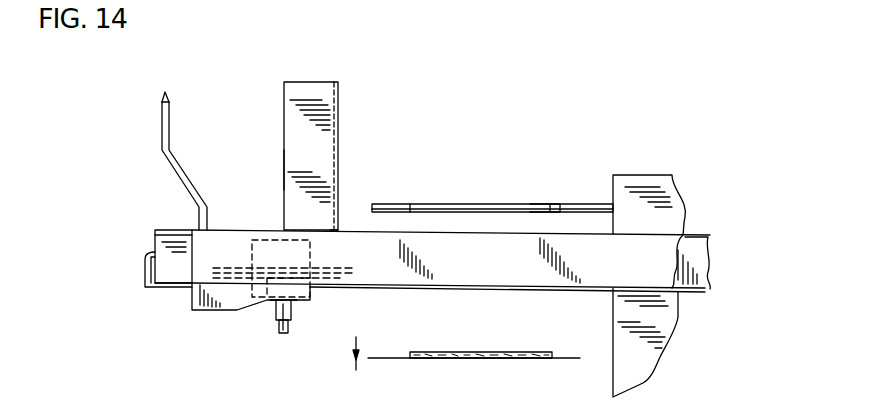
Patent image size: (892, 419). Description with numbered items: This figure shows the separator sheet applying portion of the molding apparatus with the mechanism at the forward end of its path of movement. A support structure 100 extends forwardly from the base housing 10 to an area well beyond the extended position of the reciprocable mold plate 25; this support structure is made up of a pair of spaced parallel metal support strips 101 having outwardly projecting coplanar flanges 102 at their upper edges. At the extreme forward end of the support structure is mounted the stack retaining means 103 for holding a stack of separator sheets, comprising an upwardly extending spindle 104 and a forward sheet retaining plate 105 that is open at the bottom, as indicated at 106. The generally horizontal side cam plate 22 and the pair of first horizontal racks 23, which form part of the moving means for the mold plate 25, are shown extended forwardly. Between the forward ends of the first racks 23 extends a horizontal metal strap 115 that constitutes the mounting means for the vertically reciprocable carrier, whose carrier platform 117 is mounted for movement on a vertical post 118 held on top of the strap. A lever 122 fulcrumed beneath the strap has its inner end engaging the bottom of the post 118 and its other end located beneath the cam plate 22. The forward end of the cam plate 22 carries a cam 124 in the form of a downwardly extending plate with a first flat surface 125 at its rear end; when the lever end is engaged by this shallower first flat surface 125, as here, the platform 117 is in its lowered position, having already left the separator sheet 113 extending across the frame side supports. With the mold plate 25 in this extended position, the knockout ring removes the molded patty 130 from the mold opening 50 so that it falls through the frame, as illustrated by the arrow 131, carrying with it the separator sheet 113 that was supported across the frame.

The base housing 10 is at (660, 326).
The side cam plate 22 is at (468, 268).
The first horizontal racks 23 is at (698, 275).
The reciprocable mold plate 25 is at (468, 204).
The mold opening 50 is at (540, 204).
The support structure 100 is at (162, 290).
The metal support strips 101 is at (185, 268).
The coplanar flanges 102 is at (167, 230).
The stack retaining means 103 is at (280, 168).
The spindle 104 is at (170, 118).
The forward sheet retaining plate 105 is at (338, 132).
The open bottom of sheet retaining plate 106 is at (343, 225).
The separator sheet 113 is at (390, 358).
The horizontal metal strap 115 is at (298, 303).
The carrier platform 117 is at (352, 273).
The vertical post 118 is at (273, 304).
The lever 122 is at (285, 334).
The cam 124 is at (213, 309).
The first flat surface 125 is at (312, 301).
The patty 130 is at (462, 352).
The arrow 131 is at (353, 343).